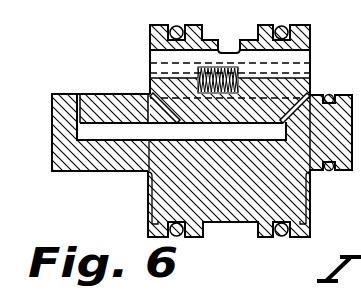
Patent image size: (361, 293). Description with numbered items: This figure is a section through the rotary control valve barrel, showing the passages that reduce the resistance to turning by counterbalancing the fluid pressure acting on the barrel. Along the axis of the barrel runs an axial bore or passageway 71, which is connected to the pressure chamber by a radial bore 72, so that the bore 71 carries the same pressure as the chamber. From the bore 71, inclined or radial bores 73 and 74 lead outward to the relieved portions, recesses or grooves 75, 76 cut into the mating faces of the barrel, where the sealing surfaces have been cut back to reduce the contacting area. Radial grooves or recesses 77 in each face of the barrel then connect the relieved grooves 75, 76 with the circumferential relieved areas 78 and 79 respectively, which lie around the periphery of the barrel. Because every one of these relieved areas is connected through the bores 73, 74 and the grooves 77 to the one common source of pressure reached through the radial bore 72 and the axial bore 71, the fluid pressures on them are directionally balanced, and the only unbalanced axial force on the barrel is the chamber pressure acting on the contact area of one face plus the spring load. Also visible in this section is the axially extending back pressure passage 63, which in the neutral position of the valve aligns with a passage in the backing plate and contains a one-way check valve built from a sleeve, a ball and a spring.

The back pressure passage 63 is at (291, 62).
The axial bore 71 is at (129, 133).
The radial bore 72 is at (76, 112).
The inclined bore 73 is at (276, 116).
The inclined bore 74 is at (157, 113).
The relieved groove 75 is at (311, 96).
The relieved groove 76 is at (150, 95).
The radial groove 77 is at (152, 201).
The circumferential relieved area 78 is at (151, 228).
The circumferential relieved area 79 is at (311, 226).